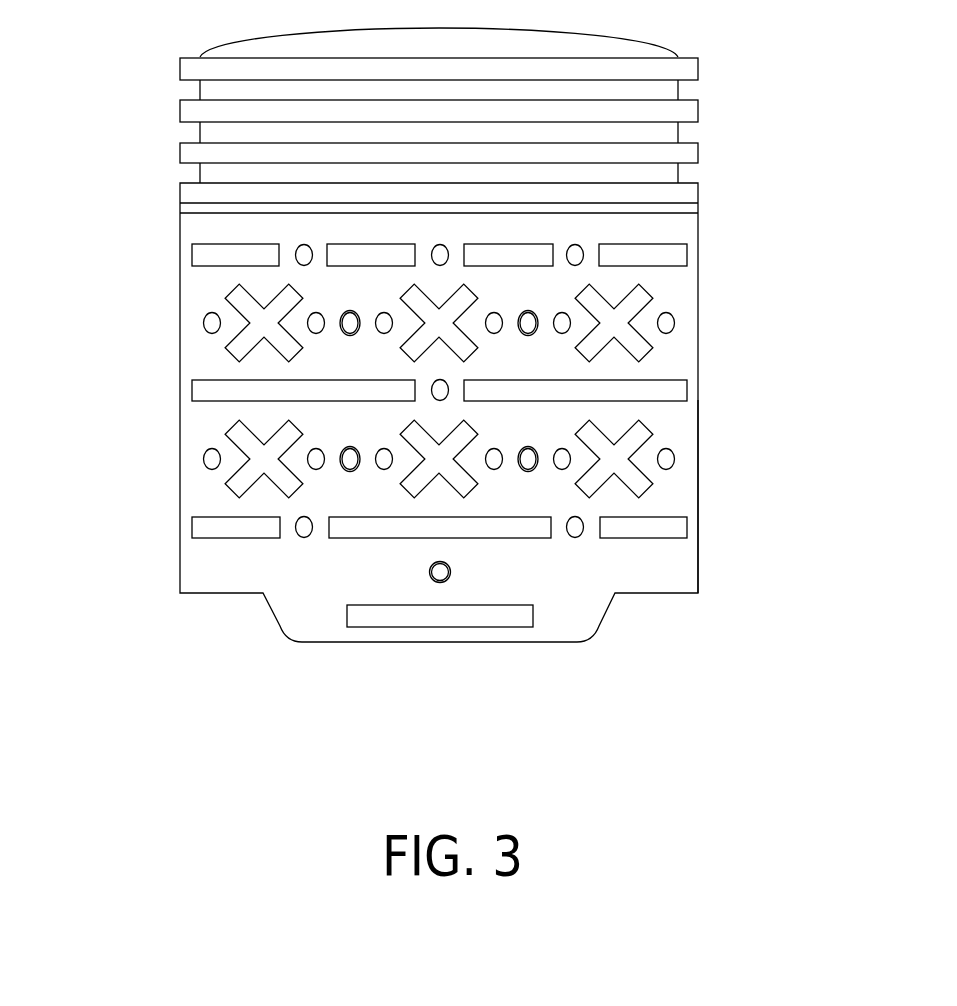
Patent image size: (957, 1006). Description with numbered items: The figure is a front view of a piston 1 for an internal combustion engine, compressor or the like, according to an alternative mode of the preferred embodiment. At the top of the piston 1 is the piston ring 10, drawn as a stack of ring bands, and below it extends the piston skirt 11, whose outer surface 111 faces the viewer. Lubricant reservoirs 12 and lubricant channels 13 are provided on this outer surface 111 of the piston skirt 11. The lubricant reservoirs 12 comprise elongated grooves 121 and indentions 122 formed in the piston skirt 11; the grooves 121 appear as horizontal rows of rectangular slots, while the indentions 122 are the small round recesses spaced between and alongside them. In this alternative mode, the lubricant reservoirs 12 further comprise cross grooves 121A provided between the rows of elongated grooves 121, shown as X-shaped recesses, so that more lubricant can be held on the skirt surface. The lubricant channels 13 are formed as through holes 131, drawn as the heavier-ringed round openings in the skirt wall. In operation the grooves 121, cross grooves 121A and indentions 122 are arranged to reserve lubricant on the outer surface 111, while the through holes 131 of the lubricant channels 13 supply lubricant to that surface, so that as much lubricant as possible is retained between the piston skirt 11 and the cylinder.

The piston 1 is at (242, 648).
The piston ring 10 is at (141, 73).
The piston skirt 11 is at (705, 377).
The outer surface 111 is at (670, 433).
The lubricant reservoirs 12 is at (70, 267).
The grooves 121 is at (213, 252).
The cross grooves 121A is at (243, 480).
The indentions 122 is at (209, 326).
The lubricant channels 13 is at (538, 487).
The through holes 131 is at (528, 323).